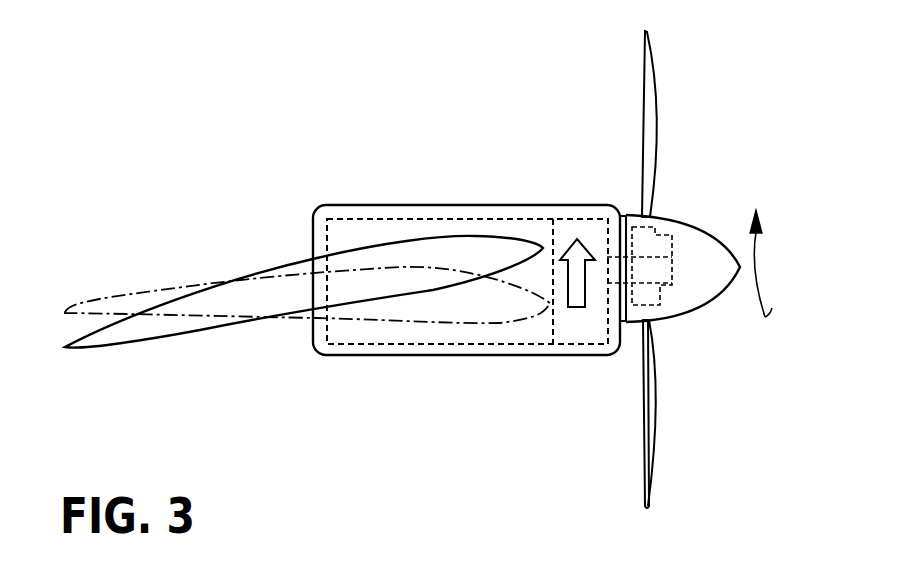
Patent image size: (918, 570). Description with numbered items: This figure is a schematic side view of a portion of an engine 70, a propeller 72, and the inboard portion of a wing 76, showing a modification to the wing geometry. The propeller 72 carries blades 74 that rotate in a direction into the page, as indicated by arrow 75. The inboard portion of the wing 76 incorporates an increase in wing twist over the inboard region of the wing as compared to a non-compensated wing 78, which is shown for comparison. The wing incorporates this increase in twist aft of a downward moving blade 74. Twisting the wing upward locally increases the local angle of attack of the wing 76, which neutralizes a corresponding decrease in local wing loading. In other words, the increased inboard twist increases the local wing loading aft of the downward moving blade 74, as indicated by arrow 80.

The engine 70 is at (482, 207).
The propeller 72 is at (710, 232).
The blades 74 is at (650, 135).
The arrow 75 is at (758, 268).
The inboard portion of a wing 76 is at (298, 260).
The non-compensated wing 78 is at (415, 323).
The arrow 80 is at (578, 310).